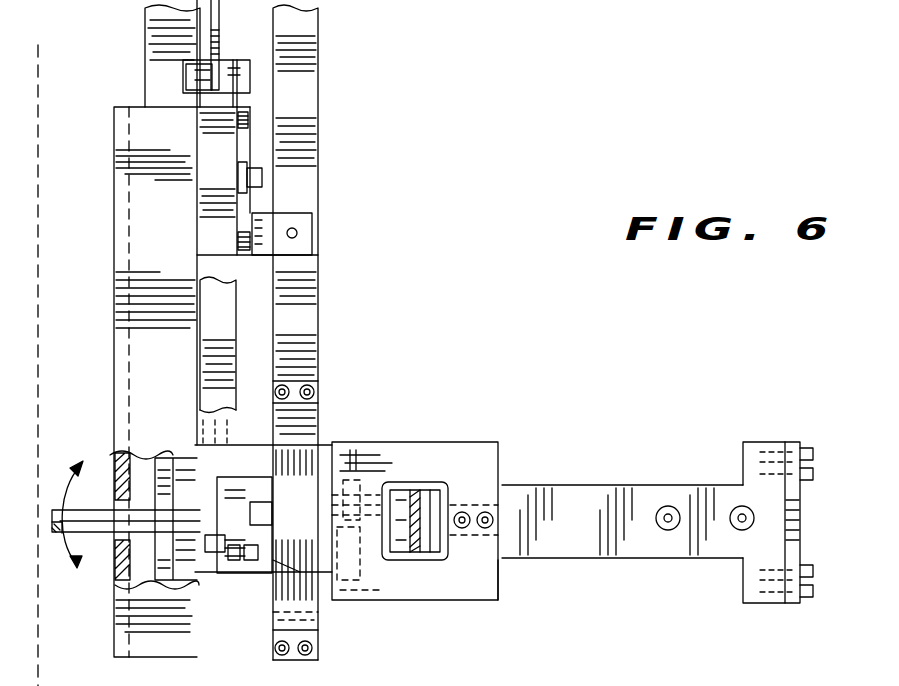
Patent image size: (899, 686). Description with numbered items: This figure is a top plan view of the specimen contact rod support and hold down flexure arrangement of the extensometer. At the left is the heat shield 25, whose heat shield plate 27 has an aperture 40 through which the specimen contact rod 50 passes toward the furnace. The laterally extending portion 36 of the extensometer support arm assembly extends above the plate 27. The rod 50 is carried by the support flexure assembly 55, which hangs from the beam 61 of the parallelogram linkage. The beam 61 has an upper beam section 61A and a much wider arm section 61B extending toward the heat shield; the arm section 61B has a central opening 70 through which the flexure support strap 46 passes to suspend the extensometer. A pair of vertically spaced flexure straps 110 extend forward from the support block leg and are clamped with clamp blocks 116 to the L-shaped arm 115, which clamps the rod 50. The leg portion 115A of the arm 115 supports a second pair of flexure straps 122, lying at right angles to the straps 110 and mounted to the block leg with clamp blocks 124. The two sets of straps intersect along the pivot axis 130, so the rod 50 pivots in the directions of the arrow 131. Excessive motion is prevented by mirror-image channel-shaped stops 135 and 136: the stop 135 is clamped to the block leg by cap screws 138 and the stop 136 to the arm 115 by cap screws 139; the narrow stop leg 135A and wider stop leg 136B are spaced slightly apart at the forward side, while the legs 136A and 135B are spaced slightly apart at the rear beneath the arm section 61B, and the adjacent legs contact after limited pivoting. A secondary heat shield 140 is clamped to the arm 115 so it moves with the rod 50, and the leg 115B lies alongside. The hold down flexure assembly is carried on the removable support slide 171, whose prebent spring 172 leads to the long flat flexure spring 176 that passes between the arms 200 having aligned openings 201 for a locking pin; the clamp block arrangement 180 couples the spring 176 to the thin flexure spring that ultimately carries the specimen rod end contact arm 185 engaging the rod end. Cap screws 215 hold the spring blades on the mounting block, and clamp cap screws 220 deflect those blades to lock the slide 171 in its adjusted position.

The heat shield 25 is at (114, 135).
The heat shield plate 27 is at (110, 453).
The laterally extending portion 36 is at (227, 318).
The aperture 40 is at (163, 516).
The flexure support strap 46 is at (480, 480).
The specimen contact rod 50 is at (80, 500).
The support flexure assembly 55 is at (241, 553).
The beam 61 is at (668, 558).
The upper beam section 61A is at (583, 502).
The arm section 61B is at (487, 590).
The central opening 70 is at (410, 490).
The flexure straps 110 is at (257, 543).
The arm 115 is at (240, 483).
The leg portion 115A is at (240, 483).
The housing lower portion 115B is at (135, 580).
The clamp blocks 116 is at (223, 540).
The flexure straps 122 is at (282, 513).
The clamp blocks 124 is at (273, 560).
The pivot axis 130 is at (278, 522).
The arrow 131 is at (100, 508).
The stop 135 is at (277, 613).
The narrow stop leg 135A is at (190, 573).
The wider stop leg 135B is at (362, 581).
The stop 136 is at (240, 404).
The narrow stop leg 136A is at (403, 440).
The wider stop leg 136B is at (200, 490).
The cap screws 138 is at (365, 555).
The cap screws 139 is at (205, 430).
The secondary heat shield 140 is at (160, 573).
The support slide 171 is at (240, 90).
The prebent spring 172 is at (219, 40).
The flexure spring 176 is at (305, 277).
The clamp block arrangement 180 is at (318, 395).
The specimen rod end contact arm 185 is at (317, 627).
The arms 200 is at (313, 218).
The aligned openings 201 is at (298, 234).
The cap screws 215 is at (255, 123).
The clamp cap screws 220 is at (263, 177).